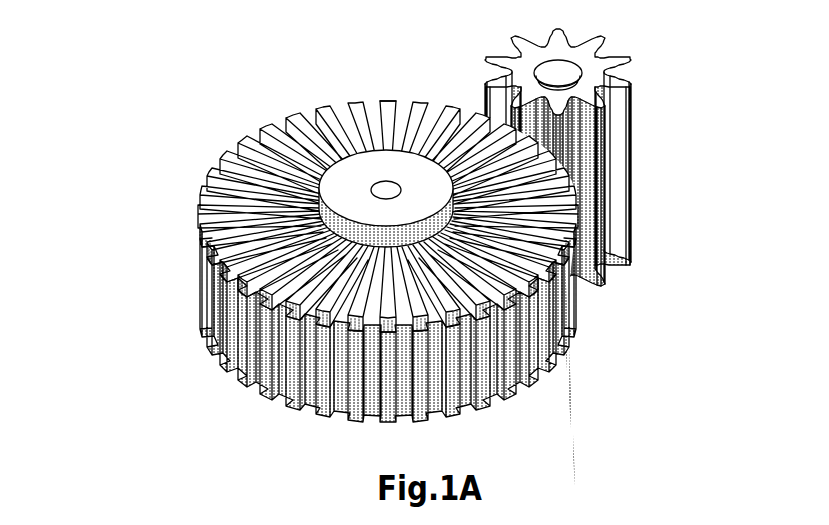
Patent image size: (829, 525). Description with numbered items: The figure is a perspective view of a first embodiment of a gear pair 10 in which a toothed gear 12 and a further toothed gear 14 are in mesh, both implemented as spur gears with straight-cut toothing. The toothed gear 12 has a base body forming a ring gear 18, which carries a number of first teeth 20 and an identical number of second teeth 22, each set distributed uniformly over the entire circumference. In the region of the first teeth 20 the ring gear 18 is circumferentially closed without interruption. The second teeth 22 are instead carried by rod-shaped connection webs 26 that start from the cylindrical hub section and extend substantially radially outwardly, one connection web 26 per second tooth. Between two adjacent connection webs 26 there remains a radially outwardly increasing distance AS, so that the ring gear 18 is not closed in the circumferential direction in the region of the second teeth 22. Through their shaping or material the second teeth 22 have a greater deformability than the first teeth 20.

The gear pair 10 is at (118, 80).
The toothed gear 12 is at (345, 175).
The further toothed gear 14 is at (622, 136).
The ring gear 18 is at (436, 293).
The first teeth 20 is at (555, 334).
The second teeth 22 is at (226, 162).
The connection webs 26 is at (421, 142).
The distance AS is at (371, 104).